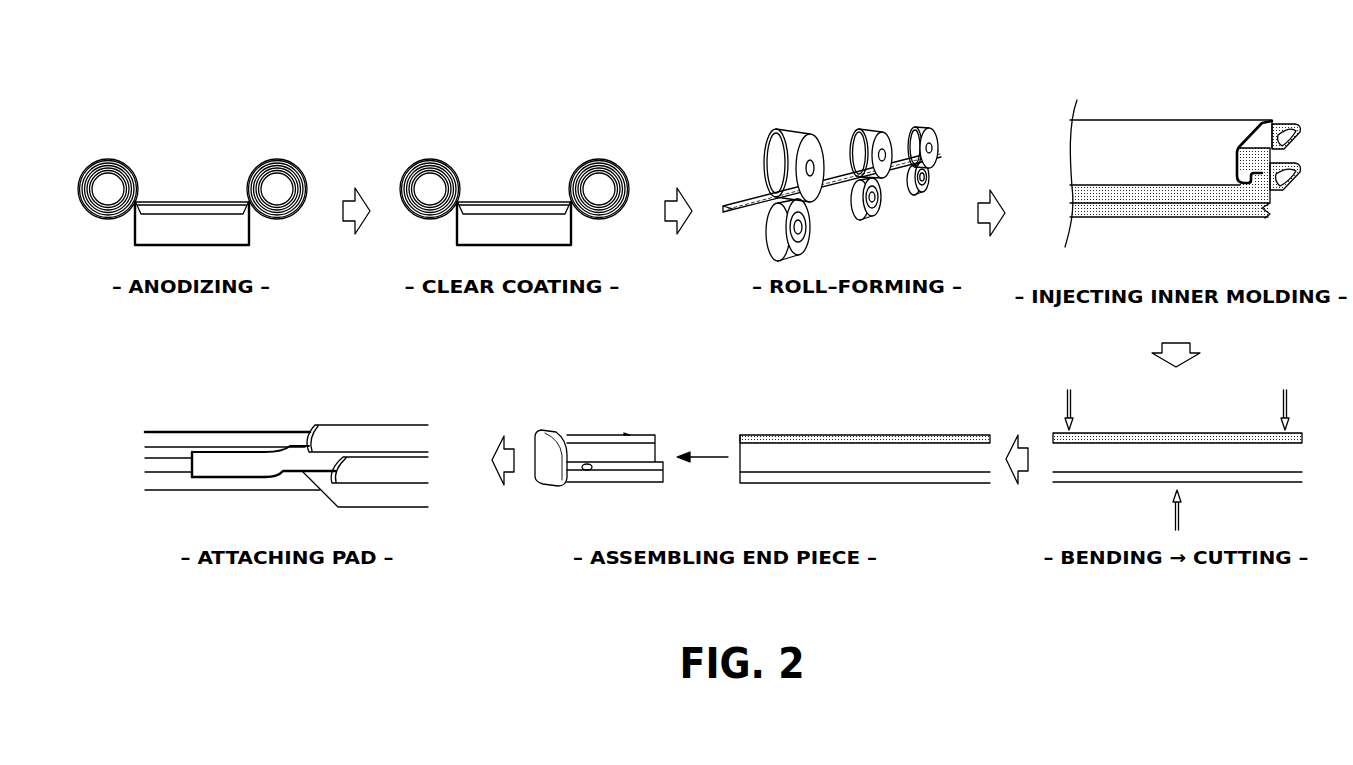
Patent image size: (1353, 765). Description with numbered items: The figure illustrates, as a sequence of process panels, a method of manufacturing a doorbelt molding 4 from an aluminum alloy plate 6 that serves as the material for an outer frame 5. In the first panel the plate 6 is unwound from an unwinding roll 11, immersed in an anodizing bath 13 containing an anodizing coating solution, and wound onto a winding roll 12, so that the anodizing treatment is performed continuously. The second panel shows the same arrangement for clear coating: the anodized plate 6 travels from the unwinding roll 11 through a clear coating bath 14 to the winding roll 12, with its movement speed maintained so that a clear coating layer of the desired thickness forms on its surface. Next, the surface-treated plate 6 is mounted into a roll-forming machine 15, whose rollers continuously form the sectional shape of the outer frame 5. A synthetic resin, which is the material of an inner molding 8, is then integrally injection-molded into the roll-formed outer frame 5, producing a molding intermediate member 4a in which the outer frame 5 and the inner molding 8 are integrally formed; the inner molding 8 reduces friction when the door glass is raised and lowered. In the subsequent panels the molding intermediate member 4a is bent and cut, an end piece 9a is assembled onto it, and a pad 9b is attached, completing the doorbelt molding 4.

The doorbelt molding 4 is at (399, 510).
The molding intermediate member 4a is at (1279, 112).
The outer frame 5 is at (1135, 127).
The aluminum alloy plate 6 is at (177, 213).
The inner molding 8 is at (1258, 188).
The end piece 9a is at (587, 432).
The pad 9b is at (222, 460).
The unwinding roll 11 is at (105, 180).
The winding roll 12 is at (285, 182).
The anodizing bath 13 is at (250, 230).
The clear coating bath 14 is at (572, 230).
The roll-forming machine 15 is at (876, 131).